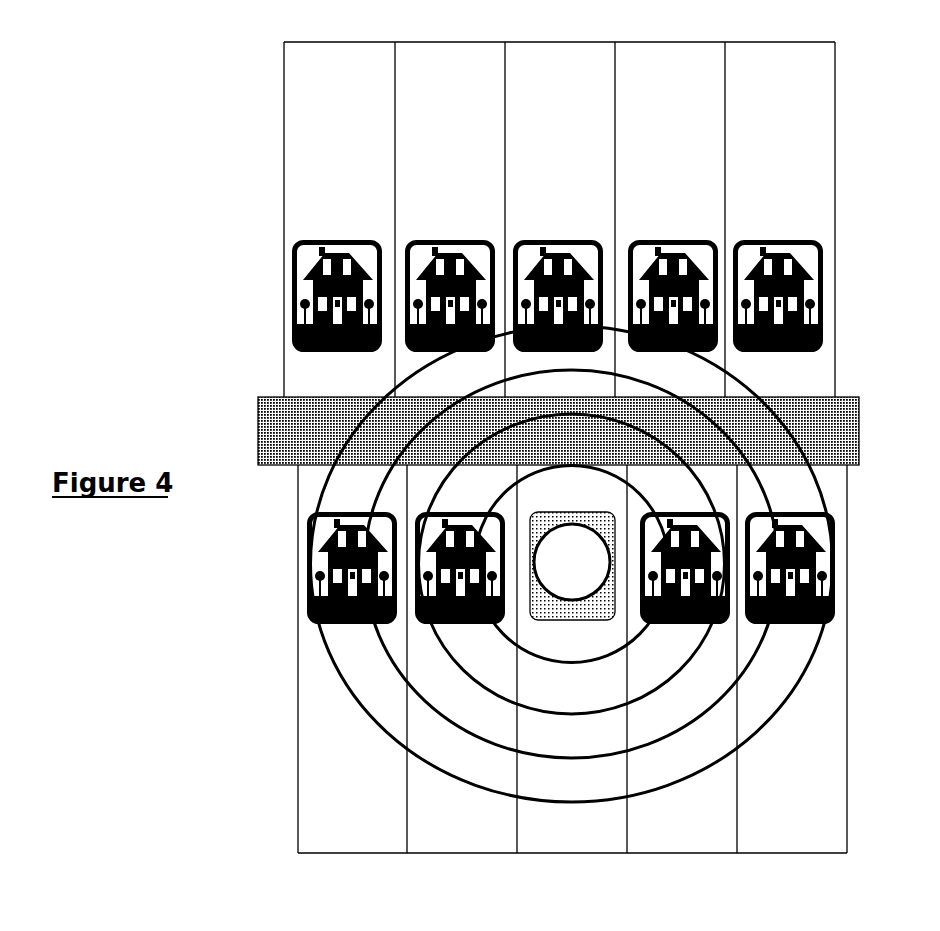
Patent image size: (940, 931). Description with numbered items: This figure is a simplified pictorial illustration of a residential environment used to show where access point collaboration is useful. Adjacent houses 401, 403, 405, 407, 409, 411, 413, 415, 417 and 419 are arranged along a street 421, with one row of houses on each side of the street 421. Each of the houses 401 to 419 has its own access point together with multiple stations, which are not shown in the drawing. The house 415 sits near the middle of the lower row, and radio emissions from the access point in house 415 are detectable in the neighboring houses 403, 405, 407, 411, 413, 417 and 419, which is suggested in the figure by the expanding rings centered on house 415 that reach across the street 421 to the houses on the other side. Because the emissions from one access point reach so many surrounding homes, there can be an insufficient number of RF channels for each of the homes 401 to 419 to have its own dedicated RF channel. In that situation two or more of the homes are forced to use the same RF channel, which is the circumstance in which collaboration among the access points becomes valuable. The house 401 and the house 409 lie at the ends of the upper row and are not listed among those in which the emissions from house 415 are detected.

The house 401 is at (337, 280).
The house 403 is at (450, 280).
The house 405 is at (558, 280).
The house 407 is at (673, 280).
The house 409 is at (778, 280).
The house 411 is at (352, 588).
The house 413 is at (460, 588).
The house 415 is at (572, 582).
The house 417 is at (685, 584).
The house 419 is at (790, 584).
The street 421 is at (583, 431).